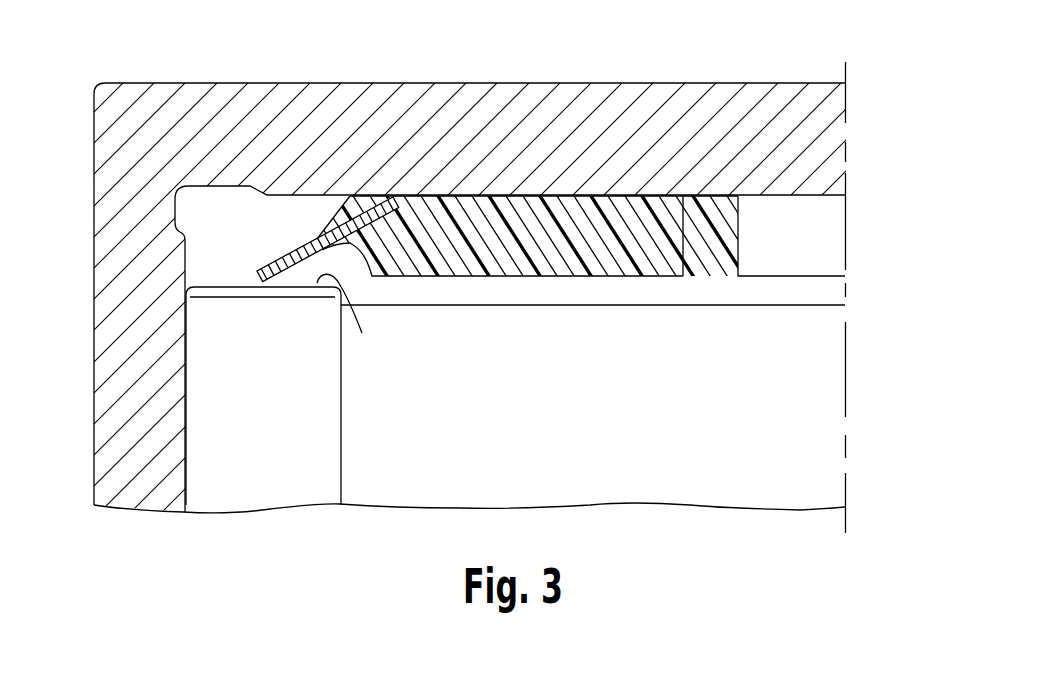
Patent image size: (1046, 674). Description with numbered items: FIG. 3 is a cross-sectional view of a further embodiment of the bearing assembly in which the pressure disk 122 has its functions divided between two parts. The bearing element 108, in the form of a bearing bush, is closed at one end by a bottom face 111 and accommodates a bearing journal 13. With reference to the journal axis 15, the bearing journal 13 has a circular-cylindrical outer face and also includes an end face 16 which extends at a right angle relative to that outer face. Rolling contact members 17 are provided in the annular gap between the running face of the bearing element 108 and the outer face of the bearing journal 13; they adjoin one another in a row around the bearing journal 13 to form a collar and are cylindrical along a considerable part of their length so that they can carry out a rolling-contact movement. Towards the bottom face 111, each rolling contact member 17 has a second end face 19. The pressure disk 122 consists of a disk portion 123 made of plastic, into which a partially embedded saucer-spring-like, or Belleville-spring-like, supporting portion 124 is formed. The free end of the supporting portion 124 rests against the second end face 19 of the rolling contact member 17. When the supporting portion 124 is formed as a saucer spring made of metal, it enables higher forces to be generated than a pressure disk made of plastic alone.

The bearing element 108 is at (585, 83).
The bearing journal 13 is at (672, 461).
The journal axis 15 is at (845, 368).
The end face 16 is at (783, 272).
The rolling contact members 17 is at (295, 440).
The second end face 19 is at (347, 319).
The bottom face 111 is at (688, 220).
The pressure disk 122 is at (522, 276).
The disk portion 123 is at (606, 242).
The supporting portion 124 is at (345, 262).